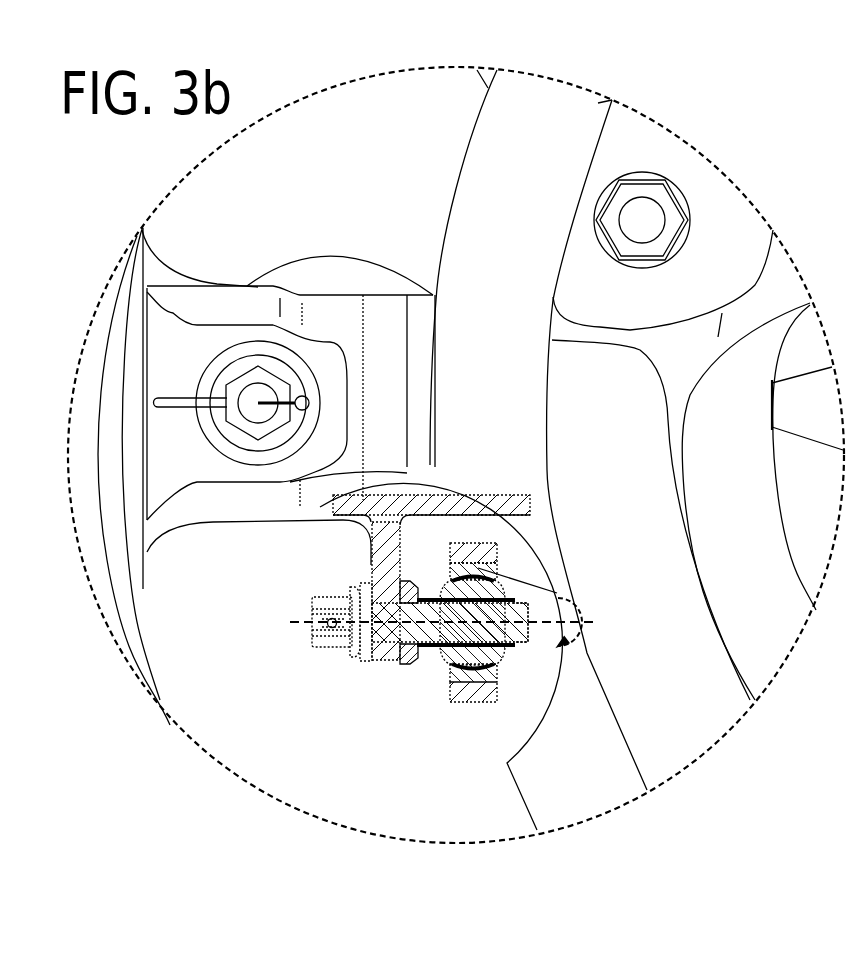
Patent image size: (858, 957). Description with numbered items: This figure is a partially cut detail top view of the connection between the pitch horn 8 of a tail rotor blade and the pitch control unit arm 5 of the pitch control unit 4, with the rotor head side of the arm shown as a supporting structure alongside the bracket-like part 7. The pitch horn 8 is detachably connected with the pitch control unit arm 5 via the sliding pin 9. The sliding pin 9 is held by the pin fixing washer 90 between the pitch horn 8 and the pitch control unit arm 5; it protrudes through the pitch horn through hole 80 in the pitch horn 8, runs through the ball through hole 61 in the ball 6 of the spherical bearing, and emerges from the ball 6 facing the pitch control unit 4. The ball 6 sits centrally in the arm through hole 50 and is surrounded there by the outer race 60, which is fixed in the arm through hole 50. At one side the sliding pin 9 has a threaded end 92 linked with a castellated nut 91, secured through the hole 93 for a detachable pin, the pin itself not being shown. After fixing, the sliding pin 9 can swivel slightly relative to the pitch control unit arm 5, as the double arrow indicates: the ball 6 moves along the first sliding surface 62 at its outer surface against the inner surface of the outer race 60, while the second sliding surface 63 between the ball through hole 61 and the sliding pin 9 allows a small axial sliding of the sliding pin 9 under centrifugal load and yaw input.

The pitch control unit 4 is at (482, 347).
The pitch control unit arm 5 is at (470, 690).
The ball 6 is at (447, 658).
The bracket 7 is at (257, 303).
The pitch horn 8 is at (387, 547).
The sliding pin 9 is at (503, 623).
The arm through hole 50 is at (437, 575).
The outer race 60 is at (557, 594).
The ball through hole 61 is at (523, 602).
The first sliding surface 62 is at (462, 682).
The second sliding surface 63 is at (510, 653).
The pitch horn through hole 80 is at (387, 645).
The pin fixing washer 90 is at (419, 650).
The castellated nut 91 is at (347, 600).
The threaded end 92 is at (310, 614).
The hole for detachable pin 93 is at (327, 622).